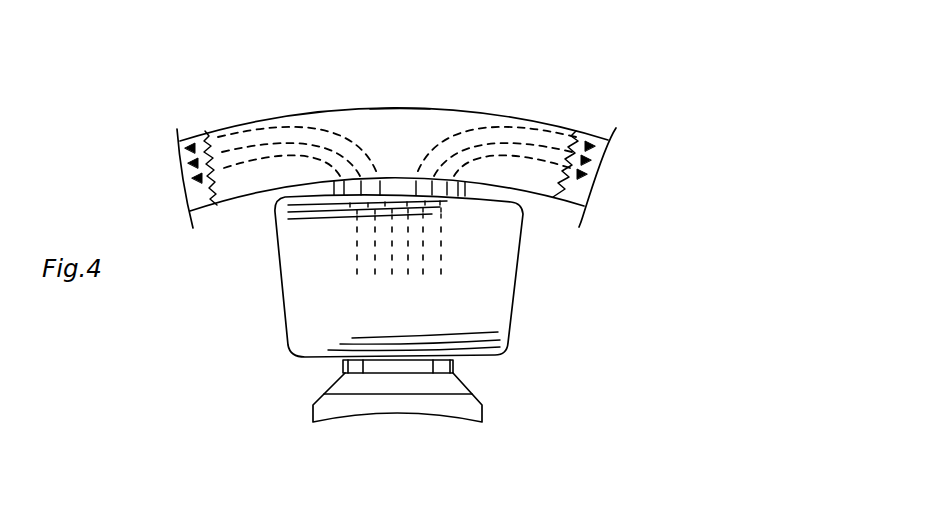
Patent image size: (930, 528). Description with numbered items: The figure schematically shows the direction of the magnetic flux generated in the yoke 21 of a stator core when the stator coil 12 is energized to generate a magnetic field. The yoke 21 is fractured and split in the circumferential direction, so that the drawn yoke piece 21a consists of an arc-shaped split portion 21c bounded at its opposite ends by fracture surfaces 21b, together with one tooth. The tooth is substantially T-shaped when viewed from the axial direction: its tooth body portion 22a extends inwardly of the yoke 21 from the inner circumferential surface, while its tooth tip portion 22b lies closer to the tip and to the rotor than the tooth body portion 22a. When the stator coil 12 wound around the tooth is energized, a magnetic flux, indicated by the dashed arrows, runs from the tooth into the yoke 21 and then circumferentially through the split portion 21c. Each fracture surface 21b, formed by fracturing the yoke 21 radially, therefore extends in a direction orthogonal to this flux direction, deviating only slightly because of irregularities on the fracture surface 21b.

The stator coil 12 is at (492, 297).
The yoke 21 is at (479, 88).
The yoke piece 21a is at (271, 116).
The fracture surface 21b is at (208, 133).
The split portion 21c is at (399, 122).
The tooth body portion 22a is at (342, 367).
The tooth tip portion 22b is at (408, 405).